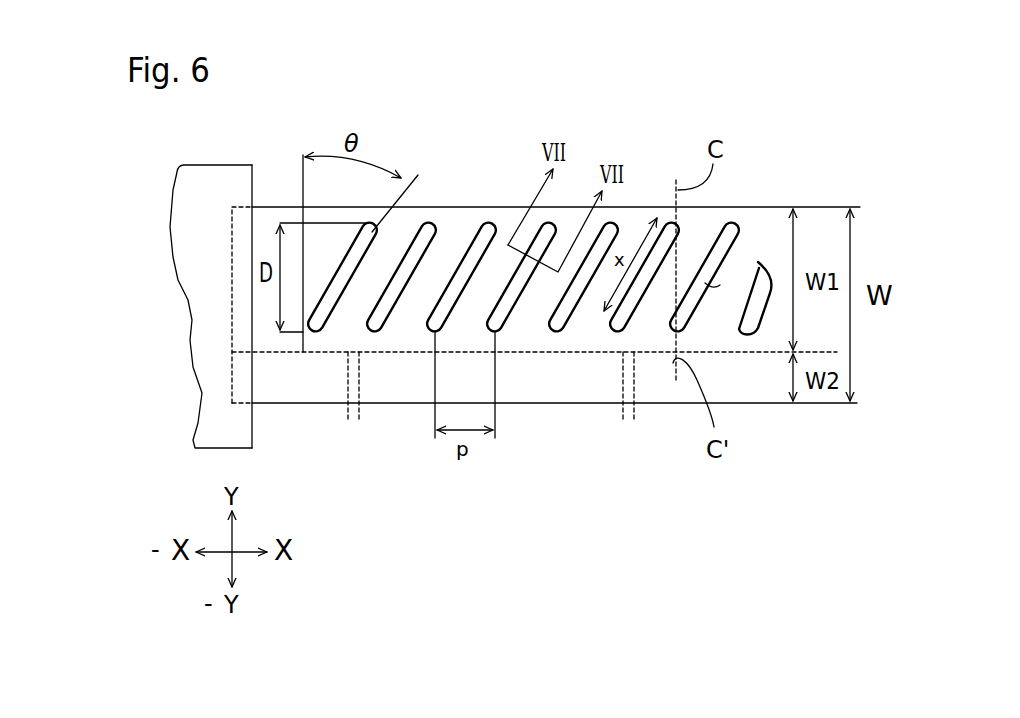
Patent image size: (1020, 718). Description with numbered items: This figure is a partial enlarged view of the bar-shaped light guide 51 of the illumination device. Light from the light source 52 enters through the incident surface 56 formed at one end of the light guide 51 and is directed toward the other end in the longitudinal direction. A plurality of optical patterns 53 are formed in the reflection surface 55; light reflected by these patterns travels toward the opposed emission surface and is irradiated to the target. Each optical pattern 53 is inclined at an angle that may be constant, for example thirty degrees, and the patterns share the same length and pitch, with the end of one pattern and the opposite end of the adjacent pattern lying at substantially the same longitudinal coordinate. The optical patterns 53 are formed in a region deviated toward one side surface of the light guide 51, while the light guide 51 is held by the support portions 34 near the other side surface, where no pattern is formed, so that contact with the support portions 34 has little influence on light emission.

The light guide 51 is at (477, 205).
The light source 52 is at (253, 181).
The optical pattern 53 is at (393, 263).
The reflection surface 55 is at (545, 371).
The incident surface 56 is at (230, 326).
The support portion 34 is at (360, 417).